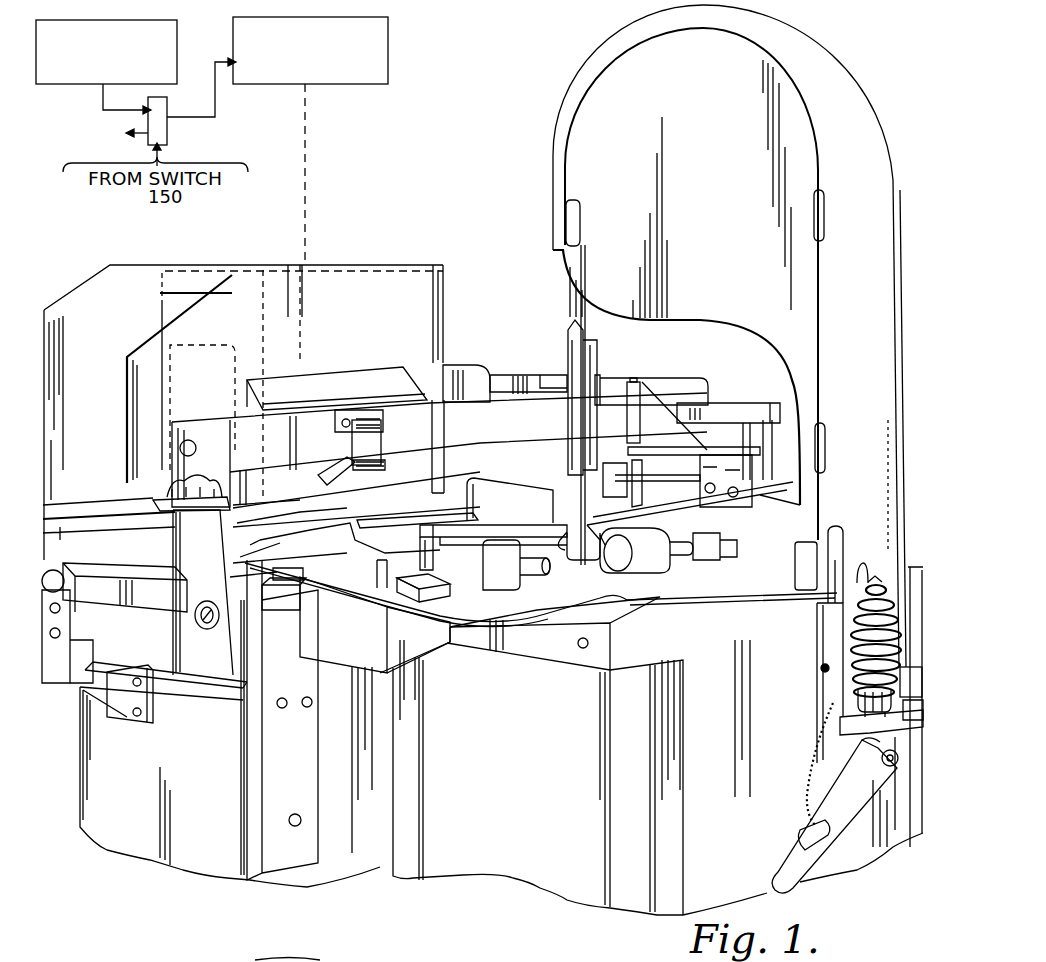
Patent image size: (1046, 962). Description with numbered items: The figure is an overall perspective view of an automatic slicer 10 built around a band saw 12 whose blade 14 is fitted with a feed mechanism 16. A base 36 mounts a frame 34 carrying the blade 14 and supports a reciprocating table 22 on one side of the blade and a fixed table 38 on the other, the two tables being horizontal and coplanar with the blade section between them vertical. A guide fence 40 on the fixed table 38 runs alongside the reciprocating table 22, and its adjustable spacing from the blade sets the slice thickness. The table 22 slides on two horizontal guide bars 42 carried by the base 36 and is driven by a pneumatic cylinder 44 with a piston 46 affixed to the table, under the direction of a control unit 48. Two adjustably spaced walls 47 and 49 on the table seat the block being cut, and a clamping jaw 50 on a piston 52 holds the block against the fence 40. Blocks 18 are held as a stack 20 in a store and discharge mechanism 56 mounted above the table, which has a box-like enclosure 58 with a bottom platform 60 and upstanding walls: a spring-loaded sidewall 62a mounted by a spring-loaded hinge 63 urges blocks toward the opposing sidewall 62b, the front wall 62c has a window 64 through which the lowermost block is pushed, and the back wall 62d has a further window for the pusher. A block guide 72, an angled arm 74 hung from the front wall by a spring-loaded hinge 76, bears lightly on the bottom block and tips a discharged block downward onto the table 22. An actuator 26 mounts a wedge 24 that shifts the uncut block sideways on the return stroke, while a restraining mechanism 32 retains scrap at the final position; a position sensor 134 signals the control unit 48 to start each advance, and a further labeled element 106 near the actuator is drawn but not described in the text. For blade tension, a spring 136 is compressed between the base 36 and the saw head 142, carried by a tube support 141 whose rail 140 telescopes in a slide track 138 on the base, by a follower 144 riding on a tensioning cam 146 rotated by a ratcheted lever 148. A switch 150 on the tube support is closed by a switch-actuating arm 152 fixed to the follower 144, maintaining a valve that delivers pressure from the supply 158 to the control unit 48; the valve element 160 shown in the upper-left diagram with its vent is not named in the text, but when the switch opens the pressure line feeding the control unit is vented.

The automatic slicer 10 is at (484, 460).
The band saw 12 is at (712, 336).
The blade 14 is at (596, 325).
The feed mechanism 16 is at (476, 400).
The blocks 18 is at (292, 494).
The stack 20 is at (142, 291).
The table 22 is at (441, 525).
The wedge 24 is at (643, 492).
The actuator 26 is at (641, 400).
The restraining mechanism 32 is at (595, 488).
The frame 34 is at (883, 181).
The base 36 is at (568, 798).
The fixed table 38 is at (380, 607).
The guide fence 40 is at (541, 602).
The horizontal guide bars 42 is at (53, 578).
The pneumatic cylinder 44 is at (118, 607).
The piston 46 is at (283, 583).
The wall 47 is at (336, 560).
The control unit 48 is at (388, 43).
The wall 49 is at (491, 497).
The clamping jaw 50 is at (500, 522).
The piston 52 is at (231, 547).
The store and discharge mechanism 56 is at (239, 385).
The box-like enclosure 58 is at (231, 254).
The bottom platform 60 is at (108, 512).
The sidewall 62a is at (206, 345).
The sidewall 62b is at (372, 264).
The front enclosure wall 62c is at (362, 317).
The back enclosure wall 62d is at (116, 329).
The spring-loaded hinge 63 is at (205, 475).
The window 64 is at (448, 462).
The block guide 72 is at (340, 401).
The angled arm 74 is at (353, 448).
The spring-loaded hinge 76 is at (367, 406).
The guide rail 106 is at (743, 396).
The position sensor 134 is at (402, 590).
The spring 136 is at (862, 590).
The slide track 138 is at (858, 641).
The rail 140 is at (822, 590).
The tube support 141 is at (860, 588).
The saw head 142 is at (883, 275).
The follower 144 is at (870, 735).
The tensioning cam 146 is at (863, 769).
The ratcheted lever 148 is at (796, 818).
The switch 150 is at (870, 693).
The switch-actuating arm 152 is at (895, 768).
The supply 158 is at (177, 32).
The valve 160 is at (168, 127).